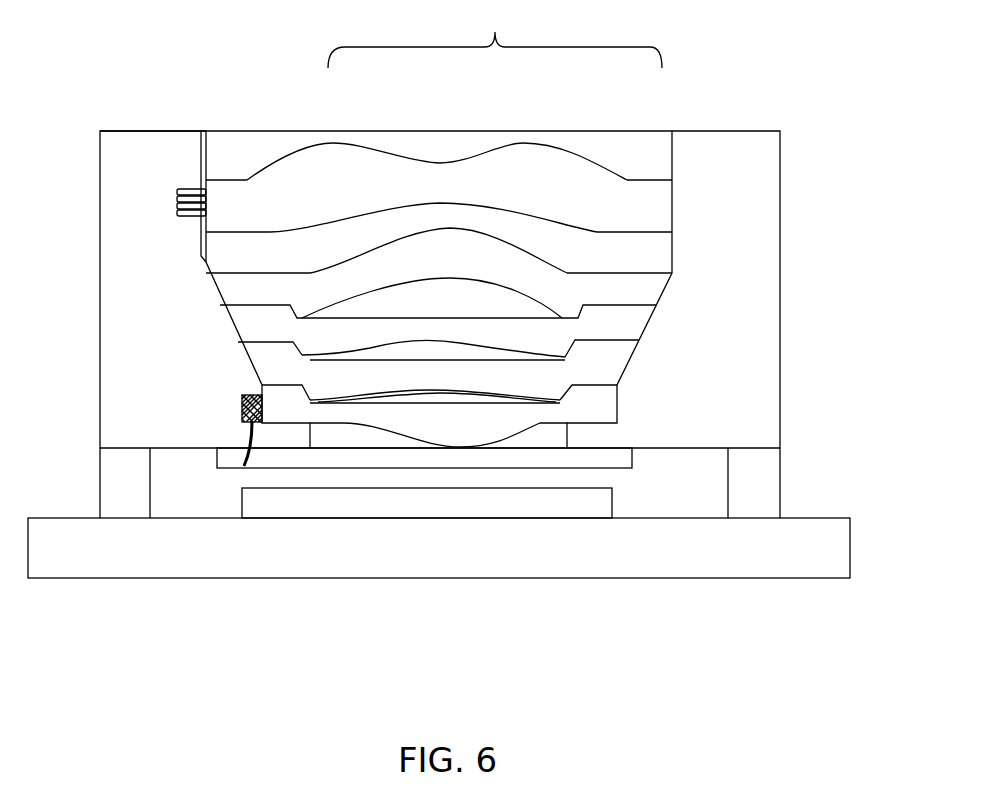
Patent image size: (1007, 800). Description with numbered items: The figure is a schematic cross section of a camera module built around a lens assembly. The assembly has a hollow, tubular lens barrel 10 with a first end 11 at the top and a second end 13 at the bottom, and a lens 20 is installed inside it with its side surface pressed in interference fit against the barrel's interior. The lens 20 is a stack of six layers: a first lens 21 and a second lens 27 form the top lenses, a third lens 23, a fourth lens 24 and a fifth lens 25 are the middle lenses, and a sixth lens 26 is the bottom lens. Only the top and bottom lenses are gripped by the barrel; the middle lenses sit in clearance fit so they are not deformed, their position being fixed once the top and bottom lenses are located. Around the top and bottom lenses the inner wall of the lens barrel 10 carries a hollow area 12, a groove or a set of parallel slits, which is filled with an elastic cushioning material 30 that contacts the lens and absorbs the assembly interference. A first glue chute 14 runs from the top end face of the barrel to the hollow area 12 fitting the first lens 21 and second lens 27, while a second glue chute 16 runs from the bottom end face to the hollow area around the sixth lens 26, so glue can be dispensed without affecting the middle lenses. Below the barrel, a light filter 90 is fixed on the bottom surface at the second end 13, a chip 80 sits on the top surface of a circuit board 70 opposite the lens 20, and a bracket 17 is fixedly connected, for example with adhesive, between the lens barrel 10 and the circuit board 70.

The lens barrel 10 is at (454, 276).
The first end 11 is at (120, 83).
The hollow area 12 is at (132, 221).
The second end 13 is at (397, 483).
The first glue chute 14 is at (232, 148).
The second glue chute 16 is at (196, 519).
The bracket 17 is at (809, 469).
The lens 20 is at (458, 223).
The first lens 21 is at (437, 148).
The second lens 27 is at (432, 168).
The third lens 23 is at (432, 191).
The fourth lens 24 is at (433, 212).
The fifth lens 25 is at (460, 233).
The sixth lens 26 is at (506, 255).
The cushioning material 30 is at (140, 336).
The circuit board 70 is at (439, 587).
The chip 80 is at (451, 581).
The light filter 90 is at (424, 556).